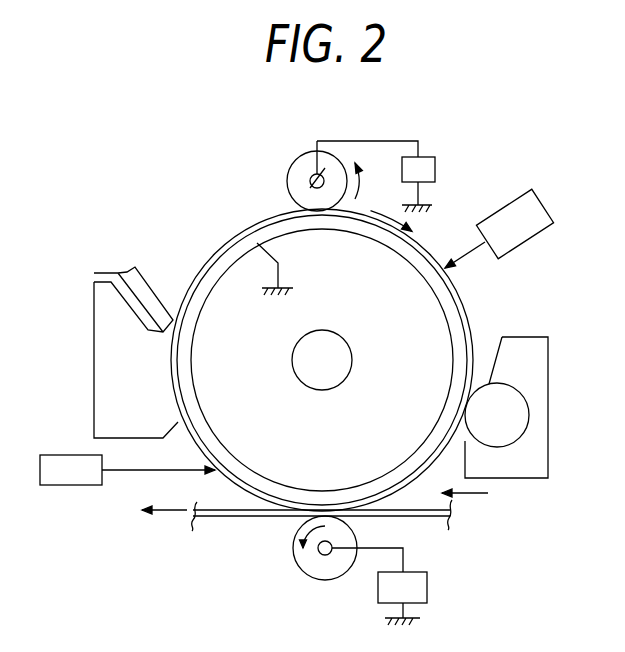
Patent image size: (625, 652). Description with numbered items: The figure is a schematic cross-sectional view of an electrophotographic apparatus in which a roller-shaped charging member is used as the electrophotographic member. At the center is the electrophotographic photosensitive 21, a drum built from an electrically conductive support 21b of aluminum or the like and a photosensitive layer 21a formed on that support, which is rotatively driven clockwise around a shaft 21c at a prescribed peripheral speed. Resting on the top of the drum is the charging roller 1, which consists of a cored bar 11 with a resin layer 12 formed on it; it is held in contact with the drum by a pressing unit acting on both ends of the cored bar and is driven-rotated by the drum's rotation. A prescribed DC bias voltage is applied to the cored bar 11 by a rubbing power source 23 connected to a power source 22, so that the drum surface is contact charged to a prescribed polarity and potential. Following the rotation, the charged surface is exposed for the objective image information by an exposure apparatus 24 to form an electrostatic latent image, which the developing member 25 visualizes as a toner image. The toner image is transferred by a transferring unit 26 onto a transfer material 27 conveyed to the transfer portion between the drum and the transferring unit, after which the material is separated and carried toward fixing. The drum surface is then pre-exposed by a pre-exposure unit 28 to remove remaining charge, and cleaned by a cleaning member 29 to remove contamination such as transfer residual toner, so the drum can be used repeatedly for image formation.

The charging roller 1 is at (285, 180).
The cored bar 11 is at (308, 184).
The resin layer 12 is at (292, 173).
The electrophotographic photosensitive 21 is at (285, 356).
The photosensitive layer 21a is at (233, 247).
The electrically conductive support 21b is at (222, 270).
The shaft 21c is at (323, 383).
The power source 22 is at (376, 176).
The rubbing power source 23 is at (313, 177).
The exposure apparatus 24 is at (499, 228).
The developing member 25 is at (512, 353).
The transferring unit 26 is at (300, 555).
The transfer material 27 is at (213, 520).
The pre-exposure unit 28 is at (127, 470).
The cleaning member 29 is at (102, 368).